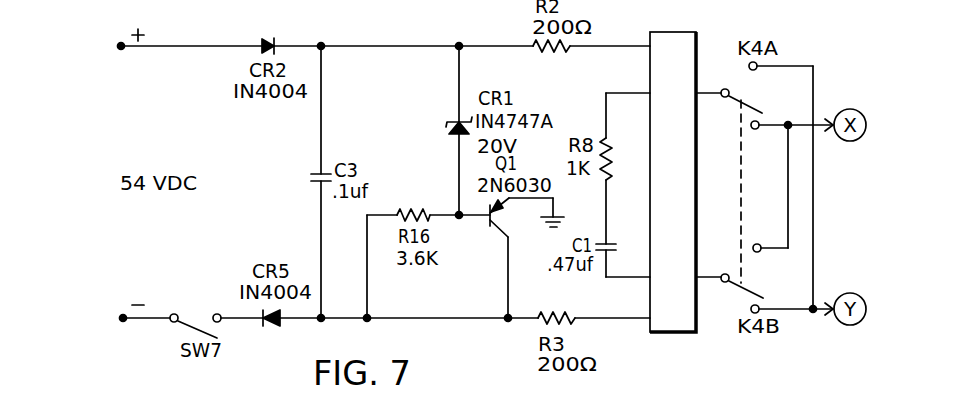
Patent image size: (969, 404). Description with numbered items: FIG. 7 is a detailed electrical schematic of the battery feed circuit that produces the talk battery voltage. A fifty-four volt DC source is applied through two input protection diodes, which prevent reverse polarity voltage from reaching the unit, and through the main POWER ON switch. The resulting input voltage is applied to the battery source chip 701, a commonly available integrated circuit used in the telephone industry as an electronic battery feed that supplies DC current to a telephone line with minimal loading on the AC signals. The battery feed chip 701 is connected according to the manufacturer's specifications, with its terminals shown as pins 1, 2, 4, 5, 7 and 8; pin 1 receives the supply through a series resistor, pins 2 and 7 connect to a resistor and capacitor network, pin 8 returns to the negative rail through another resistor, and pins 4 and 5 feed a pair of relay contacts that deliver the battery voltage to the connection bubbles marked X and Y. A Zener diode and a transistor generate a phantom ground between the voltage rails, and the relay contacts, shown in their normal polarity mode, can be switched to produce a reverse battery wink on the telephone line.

The battery source chip 701 is at (672, 333).
The IC pin 1 (supply input via R2) 1 is at (610, 32).
The IC pin 2 (timing network R8/C1) 2 is at (628, 79).
The IC pin 4 (relay contact K4A output) 4 is at (708, 79).
The IC pin 5 (relay contact K4B output) 5 is at (708, 263).
The IC pin 7 (timing network return) 7 is at (628, 263).
The IC pin 8 (ground return via R3) 8 is at (612, 305).